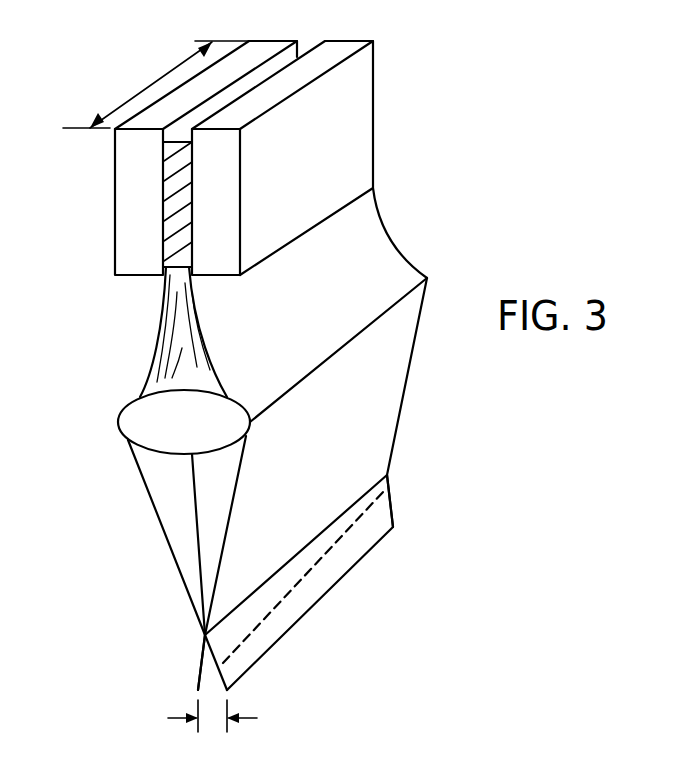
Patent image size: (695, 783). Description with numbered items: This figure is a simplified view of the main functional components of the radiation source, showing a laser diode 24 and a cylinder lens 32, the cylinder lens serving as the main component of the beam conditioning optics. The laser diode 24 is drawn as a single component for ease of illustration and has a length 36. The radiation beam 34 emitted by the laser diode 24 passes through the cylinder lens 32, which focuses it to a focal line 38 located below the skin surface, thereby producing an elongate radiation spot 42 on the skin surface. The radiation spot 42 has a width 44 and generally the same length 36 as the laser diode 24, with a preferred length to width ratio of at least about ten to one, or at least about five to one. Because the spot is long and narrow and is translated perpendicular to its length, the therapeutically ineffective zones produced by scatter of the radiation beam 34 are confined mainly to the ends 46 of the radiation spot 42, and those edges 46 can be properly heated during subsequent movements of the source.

The laser diode 24 is at (440, 68).
The cylinder lens 32 is at (250, 427).
The radiation beam 34 is at (163, 487).
The length 36 is at (160, 80).
The focal line 38 is at (313, 547).
The radiation spot 42 is at (370, 555).
The width 44 is at (233, 717).
The ends of radiation spot 46 is at (387, 521).